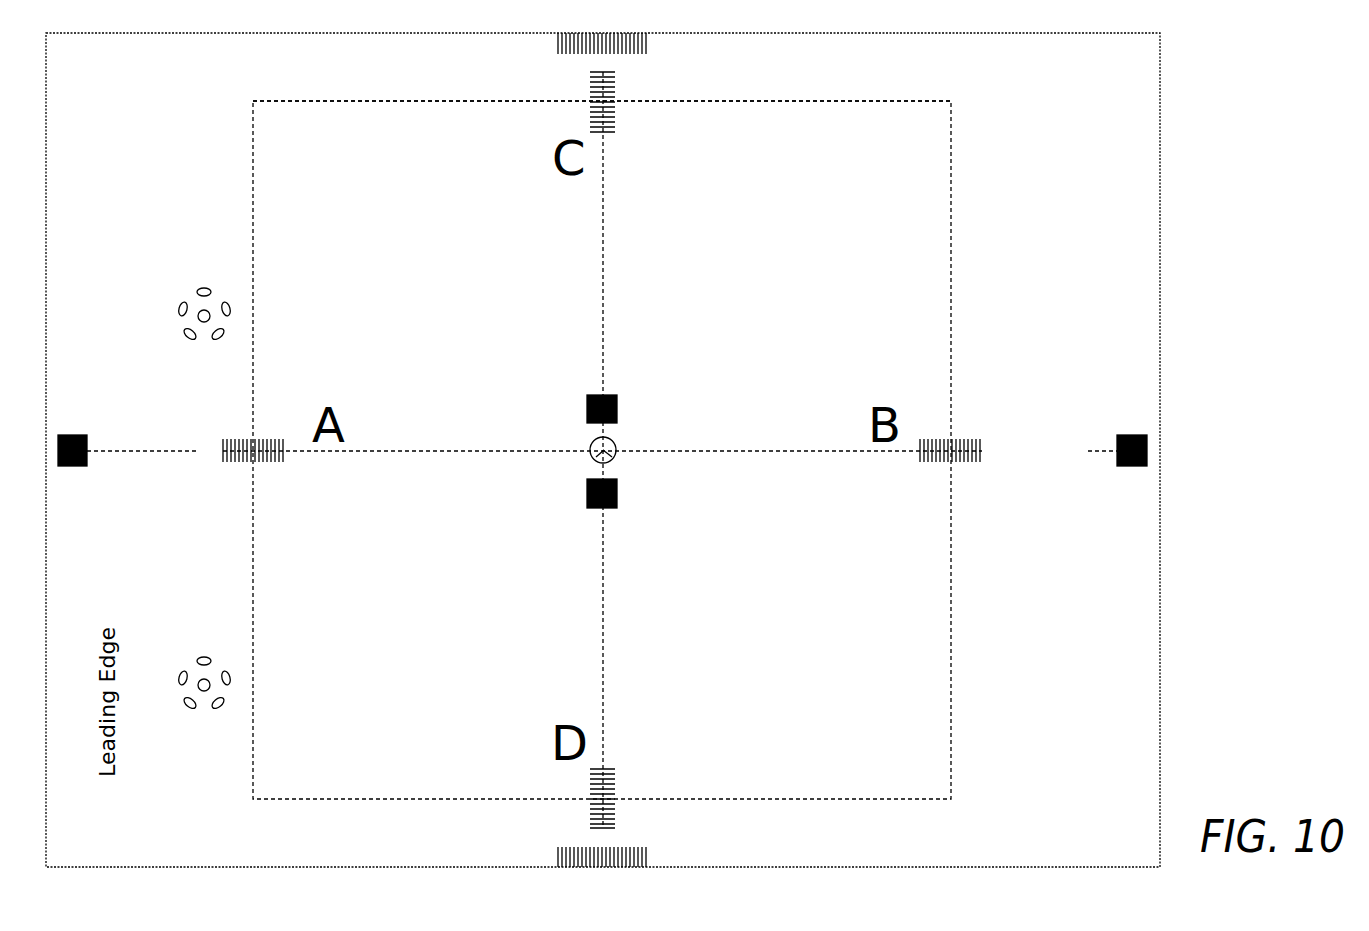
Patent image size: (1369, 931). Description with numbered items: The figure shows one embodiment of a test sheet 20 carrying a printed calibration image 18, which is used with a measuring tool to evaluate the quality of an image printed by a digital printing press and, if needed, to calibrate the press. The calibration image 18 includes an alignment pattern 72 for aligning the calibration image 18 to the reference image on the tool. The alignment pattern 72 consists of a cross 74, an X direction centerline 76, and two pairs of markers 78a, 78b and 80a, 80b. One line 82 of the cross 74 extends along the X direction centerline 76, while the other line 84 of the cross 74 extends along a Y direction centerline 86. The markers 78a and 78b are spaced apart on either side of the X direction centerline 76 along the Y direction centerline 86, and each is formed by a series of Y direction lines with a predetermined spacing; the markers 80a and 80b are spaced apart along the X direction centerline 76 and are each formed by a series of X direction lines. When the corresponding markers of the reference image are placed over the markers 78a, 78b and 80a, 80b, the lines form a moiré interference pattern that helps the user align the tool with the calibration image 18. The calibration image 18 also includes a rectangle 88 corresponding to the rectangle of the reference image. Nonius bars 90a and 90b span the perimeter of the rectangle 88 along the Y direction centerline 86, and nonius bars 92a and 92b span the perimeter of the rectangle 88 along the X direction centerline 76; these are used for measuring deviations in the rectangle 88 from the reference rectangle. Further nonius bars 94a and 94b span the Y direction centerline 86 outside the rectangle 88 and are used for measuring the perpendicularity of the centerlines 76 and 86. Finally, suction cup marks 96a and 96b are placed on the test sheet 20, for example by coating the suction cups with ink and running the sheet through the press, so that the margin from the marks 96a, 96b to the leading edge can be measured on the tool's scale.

The calibration image 18 is at (980, 168).
The test sheet 20 is at (1183, 72).
The alignment pattern 72 is at (568, 405).
The cross 74 is at (622, 439).
The X direction centerline 76 is at (733, 452).
The marker 78a is at (617, 408).
The marker 78b is at (617, 503).
The marker 80a is at (80, 442).
The marker 80b is at (1130, 433).
The line of cross 82 is at (592, 459).
The line of cross 84 is at (614, 457).
The Y direction centerline 86 is at (603, 312).
The rectangle 88 is at (793, 102).
The nonius bar 90a is at (610, 127).
The nonius bar 90b is at (610, 780).
The nonius bar 92a is at (232, 442).
The nonius bar 92b is at (968, 442).
The nonius bar 94a is at (635, 50).
The nonius bar 94b is at (632, 853).
The suction cup mark 96a is at (204, 286).
The suction cup mark 96b is at (204, 655).